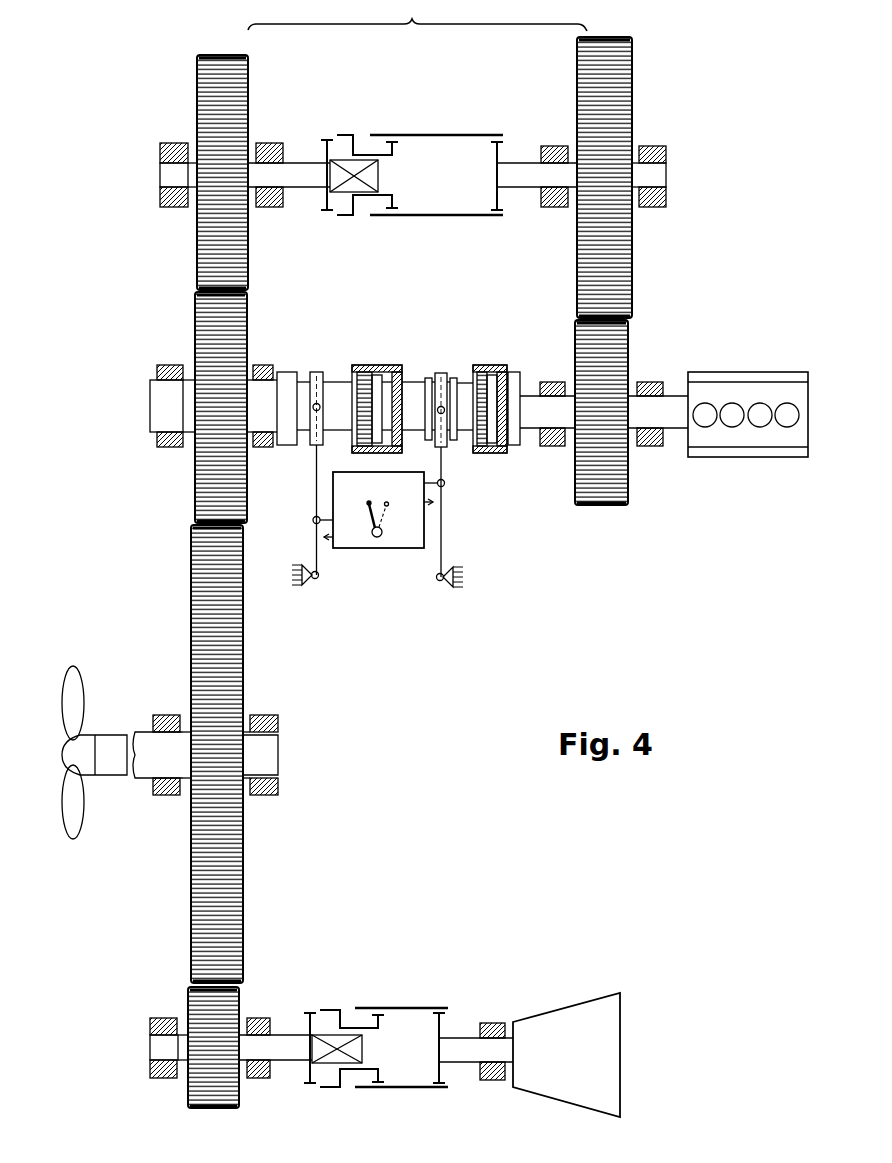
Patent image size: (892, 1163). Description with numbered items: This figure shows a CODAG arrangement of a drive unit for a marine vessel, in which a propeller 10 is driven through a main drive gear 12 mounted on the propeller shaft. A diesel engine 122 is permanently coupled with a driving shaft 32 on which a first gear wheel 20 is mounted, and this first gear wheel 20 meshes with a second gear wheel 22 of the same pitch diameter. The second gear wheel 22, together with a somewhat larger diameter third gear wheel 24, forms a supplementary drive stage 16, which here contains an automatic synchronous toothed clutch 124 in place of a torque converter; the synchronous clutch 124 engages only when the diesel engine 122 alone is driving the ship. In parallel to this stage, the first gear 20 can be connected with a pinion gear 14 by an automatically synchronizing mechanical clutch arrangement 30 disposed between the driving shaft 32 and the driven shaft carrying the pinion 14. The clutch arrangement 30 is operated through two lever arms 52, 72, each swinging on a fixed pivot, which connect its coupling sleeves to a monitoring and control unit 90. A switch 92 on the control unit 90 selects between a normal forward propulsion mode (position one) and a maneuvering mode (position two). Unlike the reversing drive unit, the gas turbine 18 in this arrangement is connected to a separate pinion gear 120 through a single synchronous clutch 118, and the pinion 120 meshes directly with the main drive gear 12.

The propeller 10 is at (84, 748).
The main drive gear 12 is at (232, 826).
The pinion gear 14 is at (204, 470).
The supplementary drive stage 16 is at (417, 15).
The gas turbine 18 is at (558, 1026).
The first gear wheel 20 is at (600, 487).
The second gear wheel 22 is at (615, 100).
The third gear wheel 24 is at (204, 88).
The clutch arrangement 30 is at (407, 348).
The driving shaft 32 is at (528, 400).
The lever arm 52 is at (441, 529).
The lever arm 72 is at (316, 475).
The monitoring and control unit 90 is at (378, 544).
The switch 92 is at (381, 542).
The synchronous clutch 118 is at (380, 993).
The pinion gear 120 is at (200, 1025).
The diesel engine 122 is at (723, 447).
The automatic synchronous toothed clutch 124 is at (423, 125).